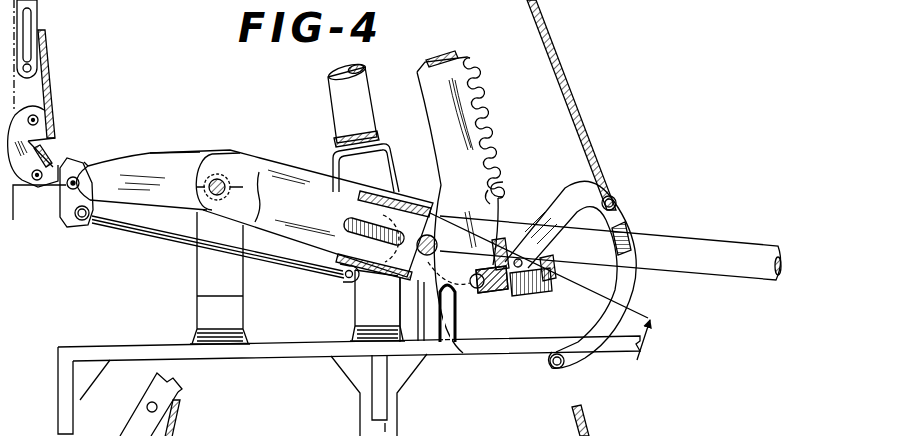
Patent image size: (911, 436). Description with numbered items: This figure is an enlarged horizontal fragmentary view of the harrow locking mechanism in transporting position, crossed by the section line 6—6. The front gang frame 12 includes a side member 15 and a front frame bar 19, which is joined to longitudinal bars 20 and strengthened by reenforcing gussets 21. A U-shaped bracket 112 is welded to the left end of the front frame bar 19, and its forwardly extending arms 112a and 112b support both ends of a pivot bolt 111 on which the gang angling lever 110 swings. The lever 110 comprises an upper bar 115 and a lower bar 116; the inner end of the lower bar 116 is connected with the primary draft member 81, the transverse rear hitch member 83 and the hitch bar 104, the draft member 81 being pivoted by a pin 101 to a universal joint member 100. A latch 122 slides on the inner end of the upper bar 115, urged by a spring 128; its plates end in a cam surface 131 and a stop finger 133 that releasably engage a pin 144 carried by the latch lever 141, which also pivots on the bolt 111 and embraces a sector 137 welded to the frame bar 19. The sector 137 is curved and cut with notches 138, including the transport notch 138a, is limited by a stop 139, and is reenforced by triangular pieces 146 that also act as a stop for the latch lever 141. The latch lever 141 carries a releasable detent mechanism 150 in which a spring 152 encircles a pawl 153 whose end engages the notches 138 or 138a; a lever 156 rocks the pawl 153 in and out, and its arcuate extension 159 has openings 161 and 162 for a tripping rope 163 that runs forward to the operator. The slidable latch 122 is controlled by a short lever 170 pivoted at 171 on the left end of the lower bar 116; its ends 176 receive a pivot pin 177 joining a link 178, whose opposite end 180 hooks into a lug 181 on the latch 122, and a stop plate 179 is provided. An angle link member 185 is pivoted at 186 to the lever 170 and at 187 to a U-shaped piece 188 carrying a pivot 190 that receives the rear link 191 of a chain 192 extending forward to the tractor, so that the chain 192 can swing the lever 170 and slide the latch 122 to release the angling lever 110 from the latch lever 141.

The section line 6- 6 is at (340, 282).
The frame 12 is at (115, 336).
The side member 15 is at (62, 379).
The front frame bar 19 is at (510, 346).
The longitudinal bars 20 is at (388, 403).
The reenforcing gussets 21 is at (90, 382).
The primary draft member 81 is at (352, 103).
The transverse rear hitch member 83 is at (677, 248).
The universal joint member 100 is at (380, 137).
The pin 101 is at (386, 168).
The hitch bar 104 is at (387, 428).
The gang angling lever 110 is at (188, 130).
The pivot bolt 111 is at (217, 177).
The bracket 112 is at (198, 278).
The bracket arm 112a is at (217, 313).
The bracket arm 112b is at (207, 290).
The upper bar 115 is at (283, 195).
The lower bar 116 is at (146, 164).
The latch 122 is at (418, 192).
The spring 128 is at (374, 279).
The cam surface 131 is at (431, 240).
The stop finger 133 is at (440, 300).
The sector 137 is at (503, 195).
The notches 138 is at (471, 62).
The transport notch 138a is at (502, 288).
The stop 139 is at (441, 56).
The latch lever 141 is at (247, 173).
The pin 144 is at (451, 256).
The triangular pieces 146 is at (457, 345).
The releasable detent mechanism 150 is at (558, 186).
The spring 152 is at (526, 263).
The pawl member 153 is at (546, 297).
The lever 156 is at (556, 272).
The extension 159 is at (580, 357).
The opening 161 is at (616, 205).
The opening 162 is at (555, 368).
The tripping rope 163 is at (567, 97).
The short lever 170 is at (86, 162).
The pivot 171 is at (92, 164).
The end 176 is at (76, 228).
The pivot pin 177 is at (86, 222).
The link 178 is at (143, 236).
The stop plate 179 is at (48, 156).
The end 180 is at (346, 278).
The lug 181 is at (344, 284).
The angle link member 185 is at (40, 122).
The pivot 186 is at (36, 196).
The pivot 187 is at (36, 118).
The U-shaped piece 188 is at (167, 425).
The pivot 190 is at (31, 65).
The rear link 191 is at (36, 32).
The chain 192 is at (47, 6).